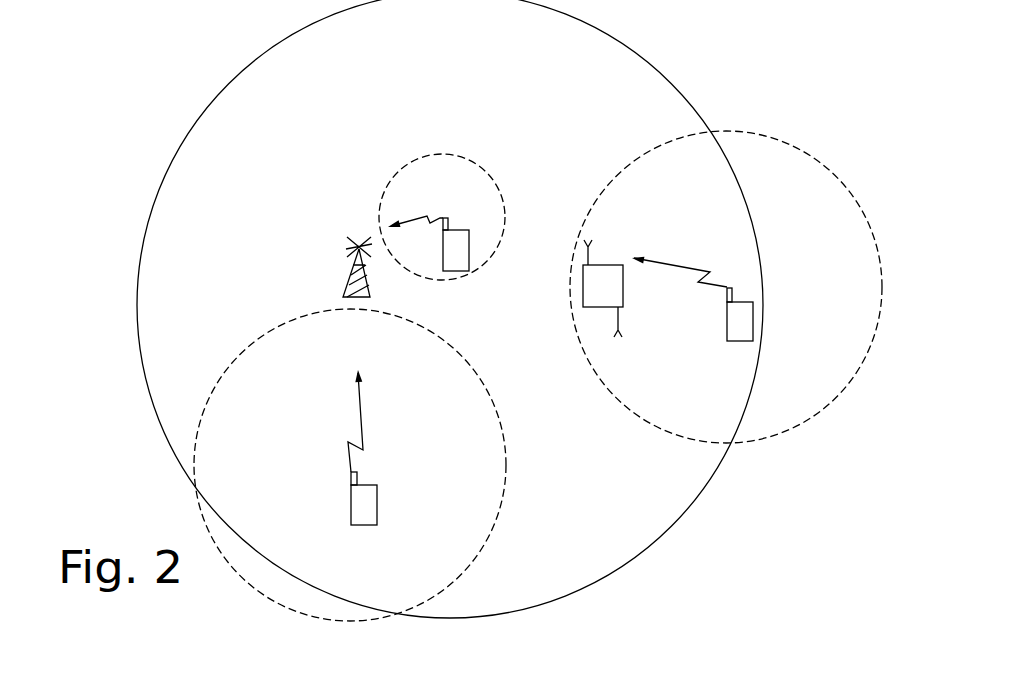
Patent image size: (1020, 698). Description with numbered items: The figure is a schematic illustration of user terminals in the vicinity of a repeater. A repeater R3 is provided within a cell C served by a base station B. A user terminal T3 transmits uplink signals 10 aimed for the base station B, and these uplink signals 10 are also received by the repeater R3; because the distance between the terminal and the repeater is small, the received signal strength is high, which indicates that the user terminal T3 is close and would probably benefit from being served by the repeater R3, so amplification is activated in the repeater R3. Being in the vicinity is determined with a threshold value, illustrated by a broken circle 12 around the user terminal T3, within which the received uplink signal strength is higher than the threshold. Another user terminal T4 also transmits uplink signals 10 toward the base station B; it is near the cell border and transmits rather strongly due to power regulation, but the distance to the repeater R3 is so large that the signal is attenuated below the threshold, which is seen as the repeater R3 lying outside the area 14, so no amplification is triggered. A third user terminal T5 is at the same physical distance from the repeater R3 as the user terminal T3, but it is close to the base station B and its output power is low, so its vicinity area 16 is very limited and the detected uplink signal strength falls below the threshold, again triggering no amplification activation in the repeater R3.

The cell C is at (188, 162).
The base station B is at (358, 245).
The area of the vicinity of user terminal T5 16 is at (432, 155).
The broken circle 12 is at (640, 158).
The area 14 is at (227, 375).
The uplink signals 10 is at (412, 216).
The user terminal T5 is at (465, 243).
The user terminal T3 is at (750, 310).
The repeater R3 is at (615, 293).
The user terminal T4 is at (365, 512).